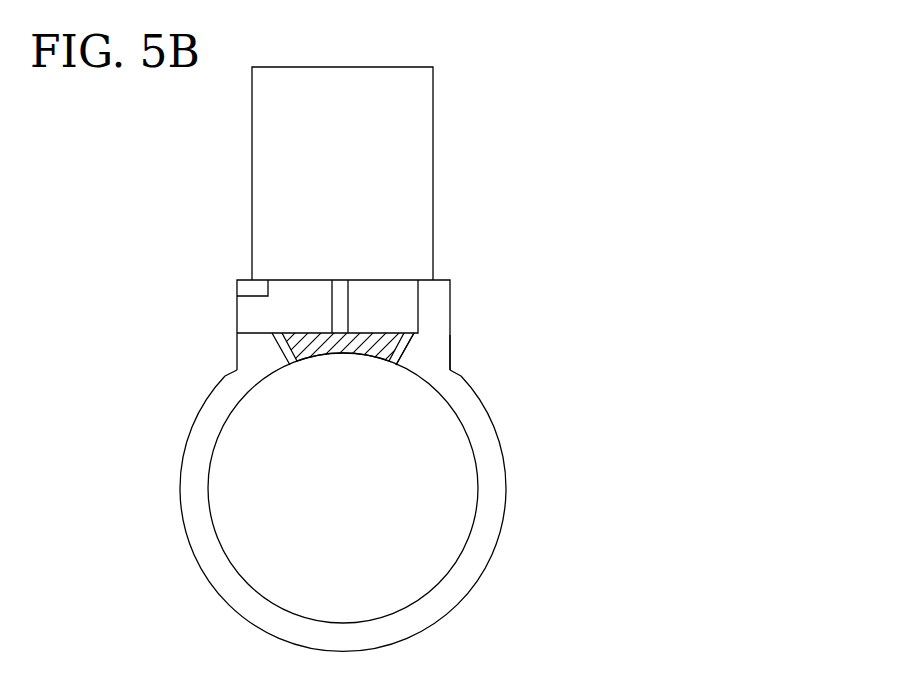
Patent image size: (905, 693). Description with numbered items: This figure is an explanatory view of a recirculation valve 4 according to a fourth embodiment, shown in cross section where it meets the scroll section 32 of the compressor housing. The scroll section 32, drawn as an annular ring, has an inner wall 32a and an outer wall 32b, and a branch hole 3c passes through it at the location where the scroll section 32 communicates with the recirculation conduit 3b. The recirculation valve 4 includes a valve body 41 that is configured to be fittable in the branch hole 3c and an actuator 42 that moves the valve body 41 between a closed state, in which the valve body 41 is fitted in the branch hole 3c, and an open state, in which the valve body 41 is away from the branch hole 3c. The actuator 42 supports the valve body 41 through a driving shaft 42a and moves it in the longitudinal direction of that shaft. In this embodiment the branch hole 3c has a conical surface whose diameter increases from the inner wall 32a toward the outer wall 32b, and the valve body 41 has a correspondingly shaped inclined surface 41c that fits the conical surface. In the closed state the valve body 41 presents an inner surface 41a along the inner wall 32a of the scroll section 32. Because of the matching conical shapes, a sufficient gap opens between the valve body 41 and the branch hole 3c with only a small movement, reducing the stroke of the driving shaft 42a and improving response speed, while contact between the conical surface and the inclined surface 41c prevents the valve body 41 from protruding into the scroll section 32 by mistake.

The recirculation valve 4 is at (365, 208).
The actuator 42 is at (357, 196).
The driving shaft 42a is at (349, 308).
The valve body 41 is at (277, 353).
The inner surface 41a is at (362, 362).
The inclined surface 41c is at (408, 341).
The recirculation conduit 3b is at (244, 314).
The branch hole 3c is at (398, 366).
The scroll section 32 is at (505, 484).
The inner wall 32a is at (245, 400).
The outer wall 32b is at (238, 323).